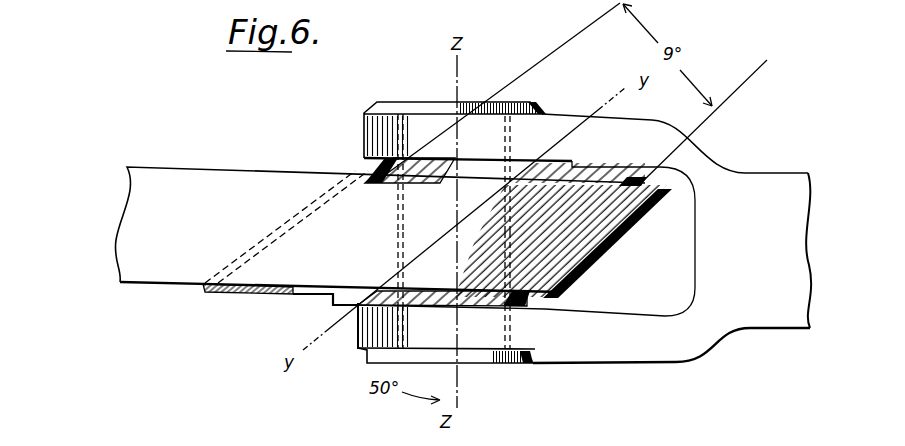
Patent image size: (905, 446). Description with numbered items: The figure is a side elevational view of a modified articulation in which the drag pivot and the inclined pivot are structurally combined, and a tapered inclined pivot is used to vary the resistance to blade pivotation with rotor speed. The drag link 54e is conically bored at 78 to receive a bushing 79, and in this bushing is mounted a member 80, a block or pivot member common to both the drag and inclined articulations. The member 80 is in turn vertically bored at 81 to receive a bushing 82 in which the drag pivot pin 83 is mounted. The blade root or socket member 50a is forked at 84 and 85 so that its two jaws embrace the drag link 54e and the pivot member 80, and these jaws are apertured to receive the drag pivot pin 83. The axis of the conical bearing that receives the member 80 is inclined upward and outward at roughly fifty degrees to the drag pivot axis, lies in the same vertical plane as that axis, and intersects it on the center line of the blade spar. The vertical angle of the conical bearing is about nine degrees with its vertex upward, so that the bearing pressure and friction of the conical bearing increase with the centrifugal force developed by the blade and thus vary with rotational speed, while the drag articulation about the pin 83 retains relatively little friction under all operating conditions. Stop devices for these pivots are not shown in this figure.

The blade root or socket member 50a is at (782, 183).
The drag link 54e is at (137, 229).
The conical bore 78 is at (263, 243).
The bushing 79 is at (240, 258).
The member 80 is at (243, 296).
The vertical bore 81 is at (396, 213).
The bushing 82 is at (396, 250).
The drag pivot pin 83 is at (400, 323).
The fork jaw 84 is at (364, 130).
The fork jaw 85 is at (323, 340).